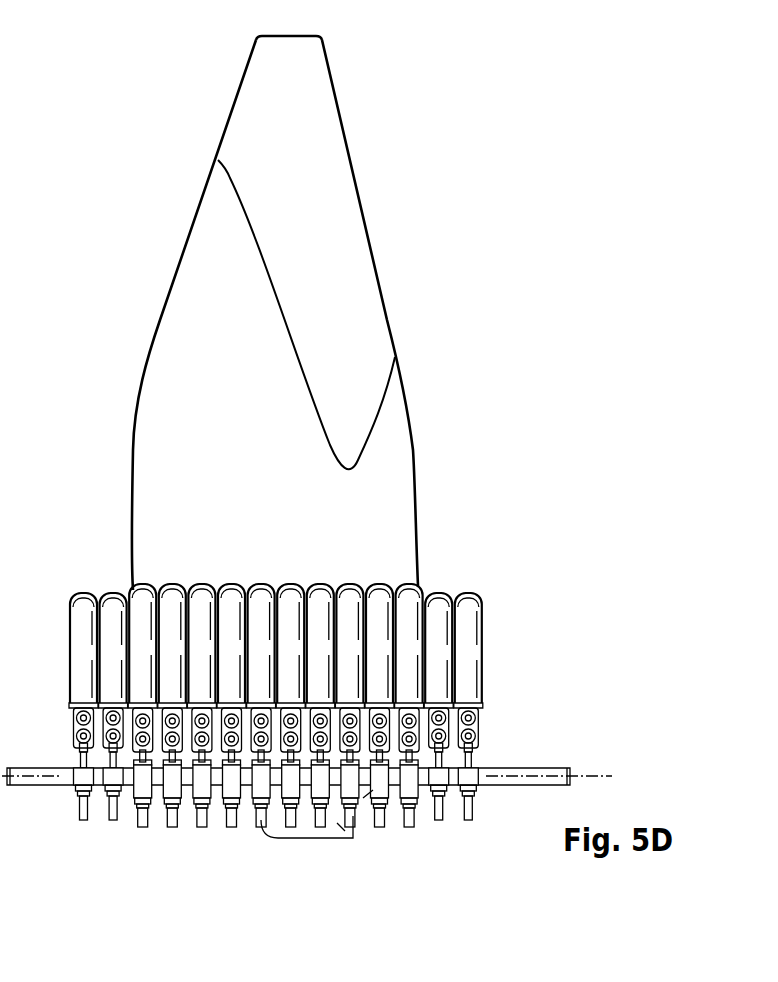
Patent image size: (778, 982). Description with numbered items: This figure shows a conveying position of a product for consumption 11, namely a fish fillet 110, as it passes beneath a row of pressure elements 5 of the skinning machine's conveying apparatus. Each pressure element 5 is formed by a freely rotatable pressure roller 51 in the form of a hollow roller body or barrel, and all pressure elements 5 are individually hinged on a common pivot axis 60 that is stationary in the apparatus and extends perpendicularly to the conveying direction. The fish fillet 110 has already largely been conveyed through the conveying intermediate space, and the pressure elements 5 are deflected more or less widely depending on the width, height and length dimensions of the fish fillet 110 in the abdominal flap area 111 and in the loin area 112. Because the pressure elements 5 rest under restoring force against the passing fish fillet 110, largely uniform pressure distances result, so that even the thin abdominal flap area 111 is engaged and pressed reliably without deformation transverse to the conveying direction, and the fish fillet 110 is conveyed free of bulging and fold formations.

The product for consumption 11 is at (285, 313).
The fish fillet 110 is at (278, 313).
The abdominal flap area 111 is at (144, 461).
The loin area 112 is at (397, 473).
The pressure element 5 is at (382, 597).
The pressure roller 51 is at (467, 658).
The pivot axis 60 is at (598, 770).